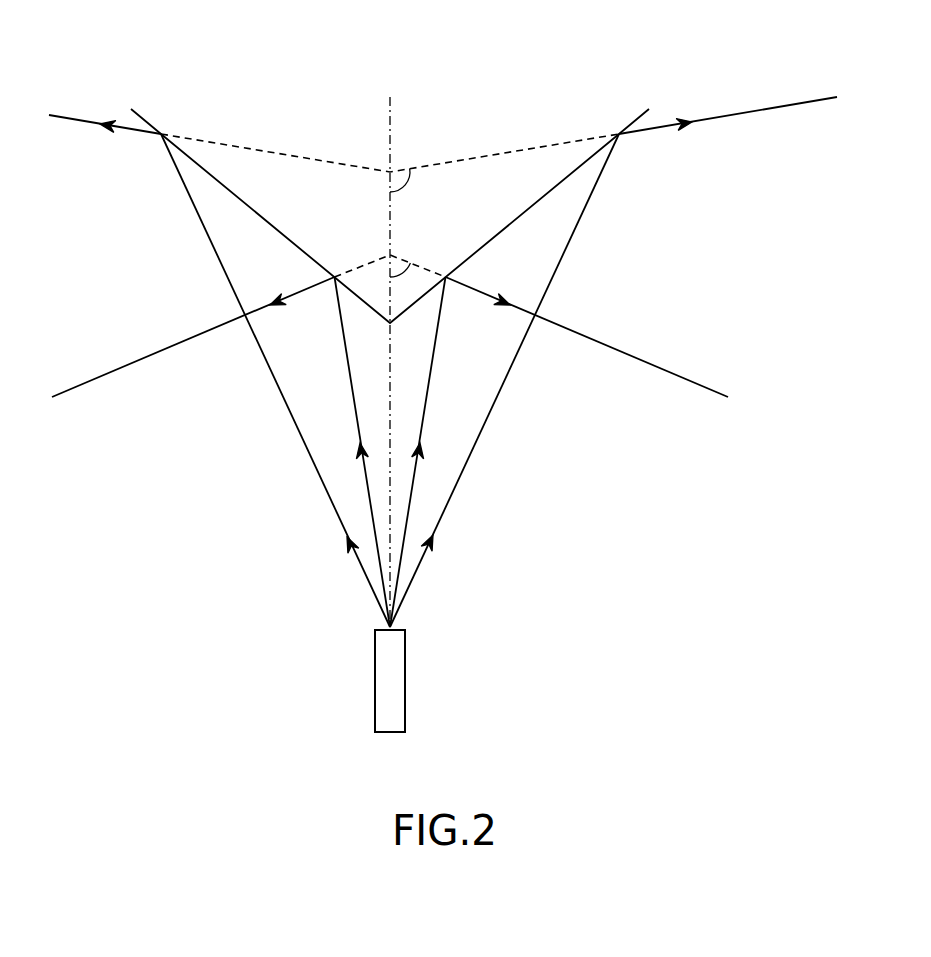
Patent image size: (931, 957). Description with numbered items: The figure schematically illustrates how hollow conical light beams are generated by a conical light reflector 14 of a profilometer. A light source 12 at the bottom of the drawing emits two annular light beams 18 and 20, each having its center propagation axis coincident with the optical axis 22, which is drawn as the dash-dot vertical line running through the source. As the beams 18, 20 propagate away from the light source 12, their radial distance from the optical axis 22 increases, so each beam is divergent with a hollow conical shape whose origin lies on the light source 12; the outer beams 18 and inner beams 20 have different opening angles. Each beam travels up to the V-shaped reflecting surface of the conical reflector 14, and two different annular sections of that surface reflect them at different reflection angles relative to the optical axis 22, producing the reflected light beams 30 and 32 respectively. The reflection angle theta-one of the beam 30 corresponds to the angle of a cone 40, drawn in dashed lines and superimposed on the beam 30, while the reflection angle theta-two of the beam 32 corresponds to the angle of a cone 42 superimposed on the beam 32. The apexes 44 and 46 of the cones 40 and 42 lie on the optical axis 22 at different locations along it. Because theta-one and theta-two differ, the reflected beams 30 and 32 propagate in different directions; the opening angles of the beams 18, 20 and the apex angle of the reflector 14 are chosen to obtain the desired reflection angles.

The light source 12 is at (400, 685).
The conical reflector 14 is at (275, 205).
The annular light beam 18 is at (303, 443).
The annular light beam 20 is at (340, 330).
The optical axis 22 is at (390, 132).
The reflected light beam 30 is at (625, 357).
The reflected light beam 32 is at (752, 113).
The cone 40 is at (367, 262).
The cone 42 is at (248, 148).
The apex 44 is at (403, 250).
The apex 46 is at (403, 160).